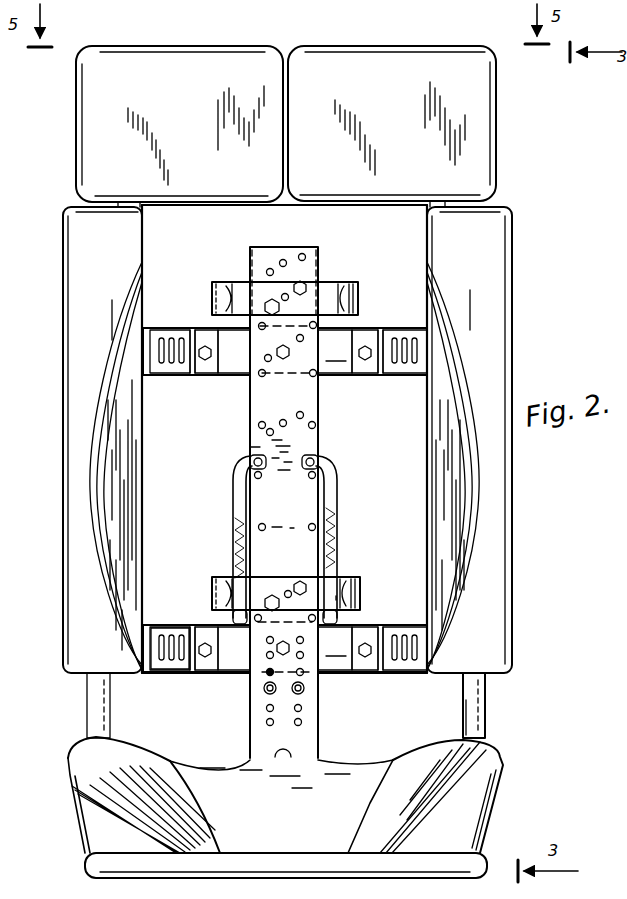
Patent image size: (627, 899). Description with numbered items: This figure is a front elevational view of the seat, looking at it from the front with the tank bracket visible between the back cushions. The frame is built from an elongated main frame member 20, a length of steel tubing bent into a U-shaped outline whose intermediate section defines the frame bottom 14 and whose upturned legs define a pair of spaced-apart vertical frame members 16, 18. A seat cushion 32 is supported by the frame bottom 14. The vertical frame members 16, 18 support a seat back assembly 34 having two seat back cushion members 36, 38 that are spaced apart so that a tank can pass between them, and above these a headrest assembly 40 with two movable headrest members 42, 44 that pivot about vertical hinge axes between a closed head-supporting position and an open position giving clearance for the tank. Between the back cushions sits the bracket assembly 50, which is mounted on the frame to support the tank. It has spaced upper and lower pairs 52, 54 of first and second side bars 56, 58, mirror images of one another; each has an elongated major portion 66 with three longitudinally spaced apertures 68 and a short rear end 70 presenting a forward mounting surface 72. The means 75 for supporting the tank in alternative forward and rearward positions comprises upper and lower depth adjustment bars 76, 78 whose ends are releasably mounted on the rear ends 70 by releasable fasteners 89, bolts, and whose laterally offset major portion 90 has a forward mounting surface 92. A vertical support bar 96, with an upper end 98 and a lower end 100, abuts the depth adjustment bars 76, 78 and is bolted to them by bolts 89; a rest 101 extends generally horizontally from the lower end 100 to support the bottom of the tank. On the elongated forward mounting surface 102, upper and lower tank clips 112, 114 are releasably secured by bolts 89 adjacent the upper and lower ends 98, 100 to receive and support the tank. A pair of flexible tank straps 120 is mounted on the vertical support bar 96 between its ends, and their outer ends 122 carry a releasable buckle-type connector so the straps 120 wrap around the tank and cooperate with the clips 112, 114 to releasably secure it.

The frame bottom 14 is at (96, 864).
The vertical frame member 16 is at (486, 691).
The vertical frame member 18 is at (88, 699).
The main frame member 20 is at (472, 717).
The seat cushion 32 is at (84, 750).
The seat back assembly 34 is at (292, 439).
The seat back cushion member 36 is at (478, 284).
The seat back cushion member 38 is at (70, 229).
The headrest assembly 40 is at (286, 126).
The headrest member 42 is at (465, 95).
The headrest member 44 is at (86, 136).
The bracket assembly 50 is at (282, 486).
The upper pair of first and second side bars 52 is at (158, 322).
The lower pair of first and second side bars 54 is at (162, 612).
The first side bar 56 is at (410, 365).
The second side bar 58 is at (152, 369).
The major portion 66 is at (181, 376).
The apertures 68 is at (152, 661).
The rear end 70 is at (197, 377).
The forward mounting surface 72 is at (372, 378).
The means for supporting the tank in alternative forward and rearward positions 75 is at (240, 390).
The upper depth adjustment bar 76 is at (336, 378).
The lower depth adjustment bar 78 is at (346, 674).
The releasable fasteners 89 is at (300, 281).
The major portion 90 is at (335, 500).
The forward mounting surface 92 is at (236, 378).
The vertical support bar 96 is at (248, 455).
The upper end 98 is at (318, 247).
The lower end 100 is at (268, 502).
The rest 101 is at (322, 751).
The forward mounting surface 102 is at (250, 445).
The upper tank clip 112 is at (220, 283).
The lower tank clip 114 is at (293, 582).
The tank straps 120 is at (279, 539).
The outer ends 122 is at (332, 615).